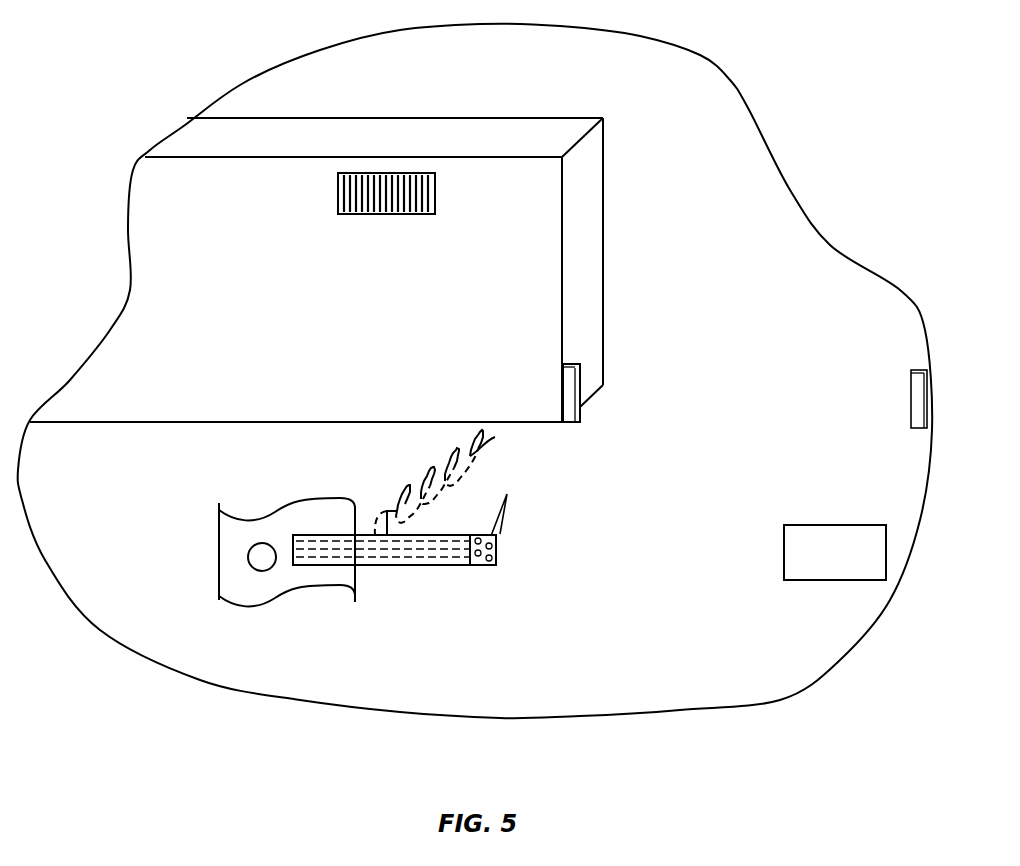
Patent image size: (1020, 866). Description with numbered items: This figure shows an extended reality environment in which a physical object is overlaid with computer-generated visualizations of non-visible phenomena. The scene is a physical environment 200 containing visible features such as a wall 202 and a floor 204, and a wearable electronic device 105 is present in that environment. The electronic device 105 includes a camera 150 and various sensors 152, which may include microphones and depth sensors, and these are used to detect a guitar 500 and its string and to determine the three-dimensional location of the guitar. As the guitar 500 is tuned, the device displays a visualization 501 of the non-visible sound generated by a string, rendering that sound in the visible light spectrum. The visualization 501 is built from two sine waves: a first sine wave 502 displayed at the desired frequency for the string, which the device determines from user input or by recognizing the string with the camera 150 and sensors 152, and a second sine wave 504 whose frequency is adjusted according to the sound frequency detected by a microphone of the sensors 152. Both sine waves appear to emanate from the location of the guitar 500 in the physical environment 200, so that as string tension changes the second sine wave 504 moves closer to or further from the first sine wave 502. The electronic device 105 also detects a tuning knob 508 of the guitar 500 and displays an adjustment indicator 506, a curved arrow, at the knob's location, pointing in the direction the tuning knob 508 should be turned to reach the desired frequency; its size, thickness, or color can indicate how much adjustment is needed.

The physical environment 200 is at (475, 371).
The wall 202 is at (316, 270).
The floor 204 is at (589, 670).
The electronic device 105 is at (797, 582).
The camera 150 is at (837, 525).
The sensors 152 is at (787, 525).
The guitar 500 is at (230, 548).
The visualization 501 is at (362, 447).
The first sine wave 502 is at (478, 478).
The second sine wave 504 is at (426, 492).
The adjustment indicator 506 is at (512, 500).
The tuning knob 508 is at (495, 548).